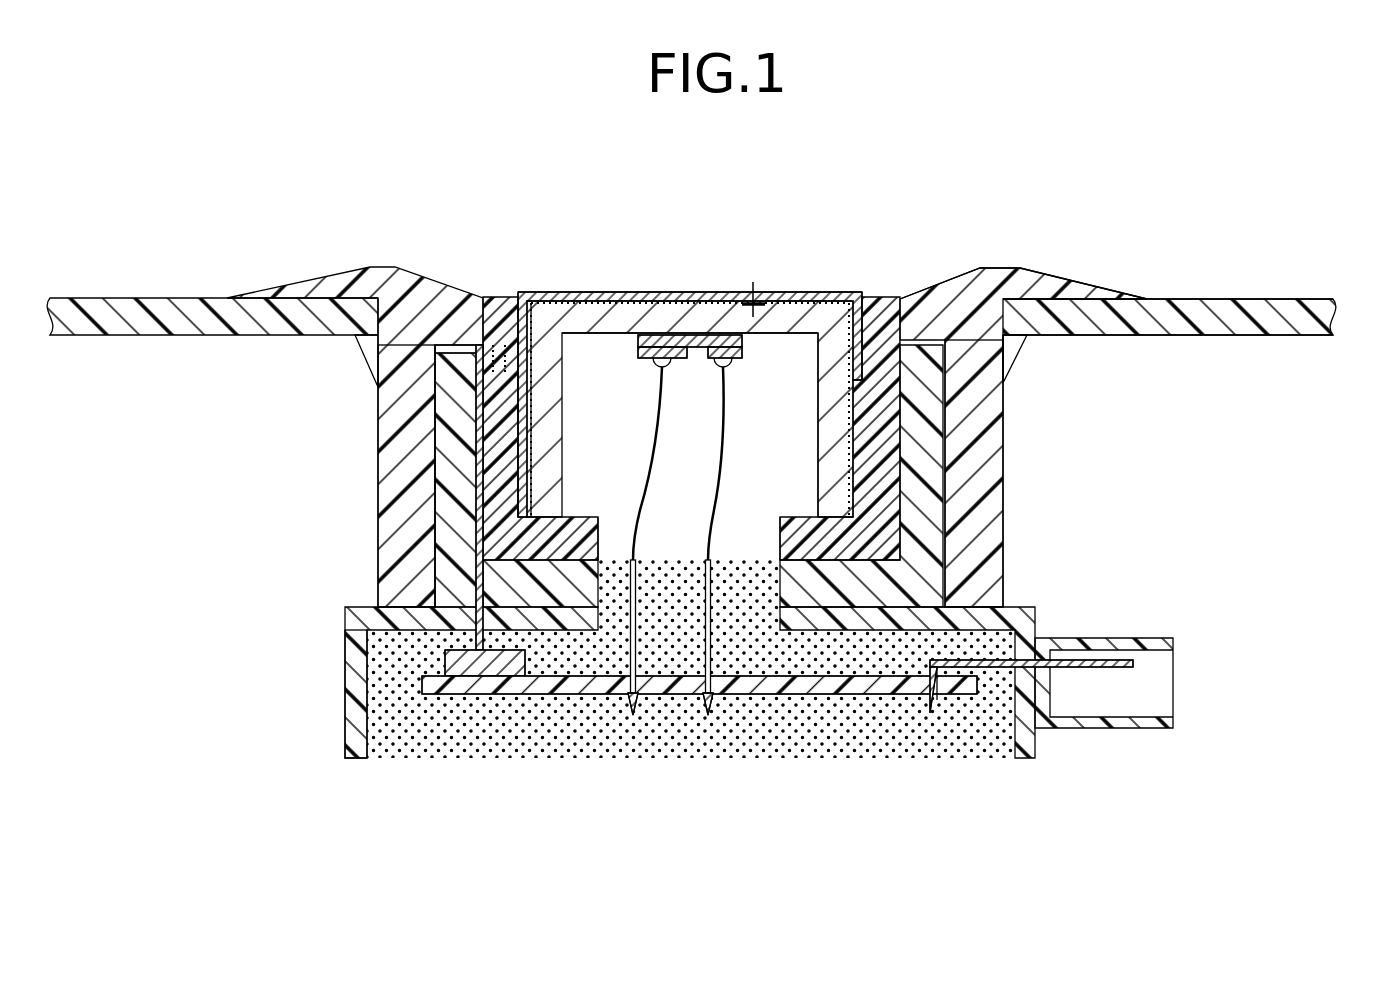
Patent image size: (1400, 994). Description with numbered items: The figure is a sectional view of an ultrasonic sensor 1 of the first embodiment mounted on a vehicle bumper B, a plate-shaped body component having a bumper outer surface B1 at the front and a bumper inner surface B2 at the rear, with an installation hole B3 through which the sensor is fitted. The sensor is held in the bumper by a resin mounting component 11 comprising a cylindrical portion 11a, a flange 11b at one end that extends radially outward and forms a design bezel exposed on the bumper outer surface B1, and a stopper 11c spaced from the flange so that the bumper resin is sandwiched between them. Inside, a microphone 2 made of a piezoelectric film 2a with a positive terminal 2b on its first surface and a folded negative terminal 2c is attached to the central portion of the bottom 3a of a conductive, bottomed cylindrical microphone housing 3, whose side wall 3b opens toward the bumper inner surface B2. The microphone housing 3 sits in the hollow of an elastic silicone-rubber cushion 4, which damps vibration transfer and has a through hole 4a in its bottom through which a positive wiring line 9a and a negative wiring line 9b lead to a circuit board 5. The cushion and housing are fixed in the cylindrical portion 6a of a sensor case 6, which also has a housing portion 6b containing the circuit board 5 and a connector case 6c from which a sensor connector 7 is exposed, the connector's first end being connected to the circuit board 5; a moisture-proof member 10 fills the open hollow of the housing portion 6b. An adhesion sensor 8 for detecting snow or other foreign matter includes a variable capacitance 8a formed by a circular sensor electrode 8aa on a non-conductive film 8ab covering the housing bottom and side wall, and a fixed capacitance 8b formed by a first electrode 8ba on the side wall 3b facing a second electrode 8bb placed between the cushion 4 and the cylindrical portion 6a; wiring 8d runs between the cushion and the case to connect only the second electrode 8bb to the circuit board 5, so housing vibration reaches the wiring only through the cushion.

The ultrasonic sensor 1 is at (940, 198).
The microphone 2 is at (715, 333).
The piezoelectric film 2a is at (667, 343).
The positive terminal 2b is at (657, 337).
The negative terminal 2c is at (697, 340).
The microphone housing 3 is at (833, 320).
The bottom 3a is at (783, 313).
The side wall 3b is at (837, 372).
The cushion 4 is at (880, 428).
The through hole 4a is at (785, 546).
The circuit board 5 is at (456, 690).
The sensor case 6 is at (343, 655).
The cylindrical portion 6a is at (455, 470).
The housing portion 6b is at (360, 680).
The connector case 6c is at (1097, 728).
The sensor connector 7 is at (1111, 660).
The adhesion sensor 8 is at (595, 290).
The variable capacitance 8a is at (763, 290).
The sensor electrode 8aa is at (738, 300).
The non-conductive film 8ab is at (857, 330).
The fixed capacitance 8b is at (496, 345).
The first electrode 8ba is at (537, 333).
The second electrode 8bb is at (473, 377).
The wiring 8d is at (477, 540).
The positive wiring line 9a is at (647, 490).
The negative wiring line 9b is at (727, 490).
The moisture-proof member 10 is at (380, 745).
The mounting component 11 is at (1006, 460).
The cylindrical portion 11a is at (1000, 530).
The flange 11b is at (998, 267).
The stopper 11c is at (1013, 367).
The bumper B is at (1335, 318).
The bumper outer surface B1 is at (1277, 299).
The bumper inner surface B2 is at (1277, 343).
The installation hole B3 is at (380, 318).